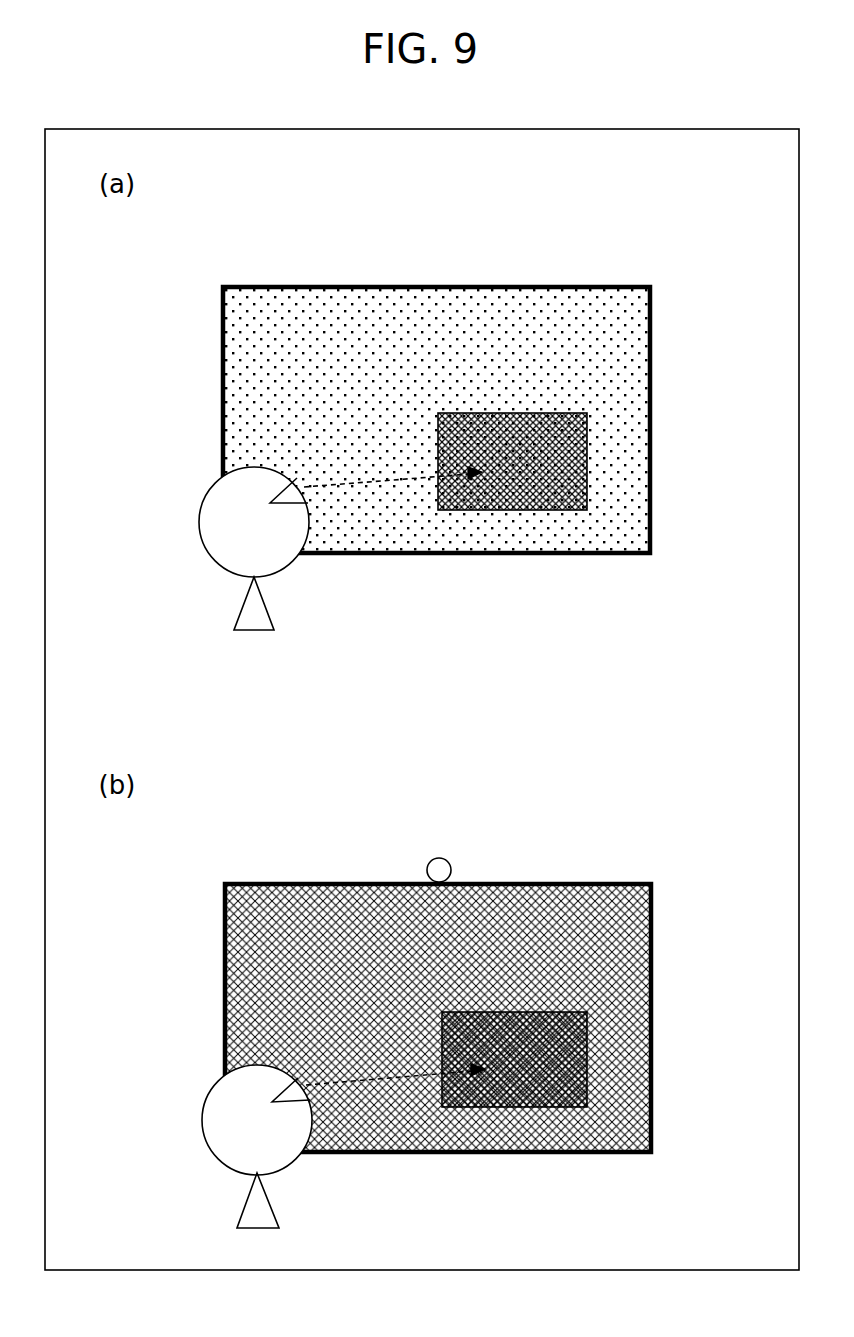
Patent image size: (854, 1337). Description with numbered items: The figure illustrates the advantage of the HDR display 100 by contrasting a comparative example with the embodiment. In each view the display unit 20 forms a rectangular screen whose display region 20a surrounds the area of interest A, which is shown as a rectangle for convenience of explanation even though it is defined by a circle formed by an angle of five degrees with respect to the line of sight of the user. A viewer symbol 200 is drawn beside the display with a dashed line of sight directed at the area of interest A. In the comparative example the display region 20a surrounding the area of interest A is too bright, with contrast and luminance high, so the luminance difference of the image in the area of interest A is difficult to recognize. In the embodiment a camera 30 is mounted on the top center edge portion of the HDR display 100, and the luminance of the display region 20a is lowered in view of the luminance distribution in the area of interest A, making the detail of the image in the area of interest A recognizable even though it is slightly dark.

The display unit 20 is at (641, 284).
The display region 20a is at (560, 303).
The camera 30 is at (440, 857).
The HDR display 100 is at (653, 315).
The camera 200 is at (199, 522).
The area of interest A is at (588, 466).